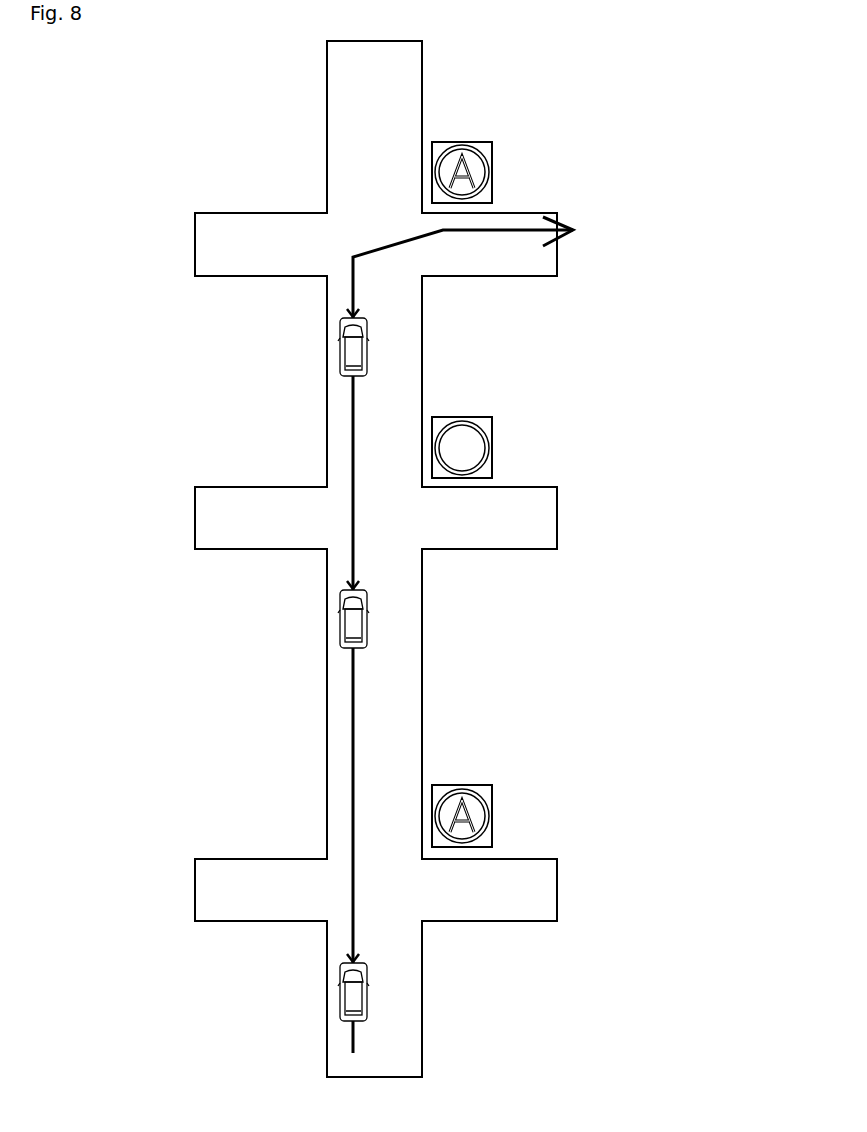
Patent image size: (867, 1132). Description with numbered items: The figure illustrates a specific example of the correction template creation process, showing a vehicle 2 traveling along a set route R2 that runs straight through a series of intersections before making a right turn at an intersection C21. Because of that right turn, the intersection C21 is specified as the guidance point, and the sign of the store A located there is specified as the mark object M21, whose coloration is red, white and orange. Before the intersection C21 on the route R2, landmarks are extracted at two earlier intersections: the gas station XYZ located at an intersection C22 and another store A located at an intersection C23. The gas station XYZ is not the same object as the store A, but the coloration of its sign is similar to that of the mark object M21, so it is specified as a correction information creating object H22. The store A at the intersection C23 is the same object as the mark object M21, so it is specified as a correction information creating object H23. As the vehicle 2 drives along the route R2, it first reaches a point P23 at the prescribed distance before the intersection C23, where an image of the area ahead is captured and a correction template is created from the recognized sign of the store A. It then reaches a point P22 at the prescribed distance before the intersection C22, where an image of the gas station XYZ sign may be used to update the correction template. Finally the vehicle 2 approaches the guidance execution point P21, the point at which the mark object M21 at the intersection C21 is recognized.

The vehicle 2 is at (367, 368).
The intersection C21 is at (326, 212).
The intersection C22 is at (326, 486).
The intersection C23 is at (326, 858).
The guidance execution point P21 is at (346, 316).
The point P22 is at (346, 588).
The point P23 is at (346, 960).
The route R2 is at (350, 693).
The mark object M21 is at (493, 153).
The correction information creating object H22 is at (493, 430).
The correction information creating object H23 is at (493, 798).